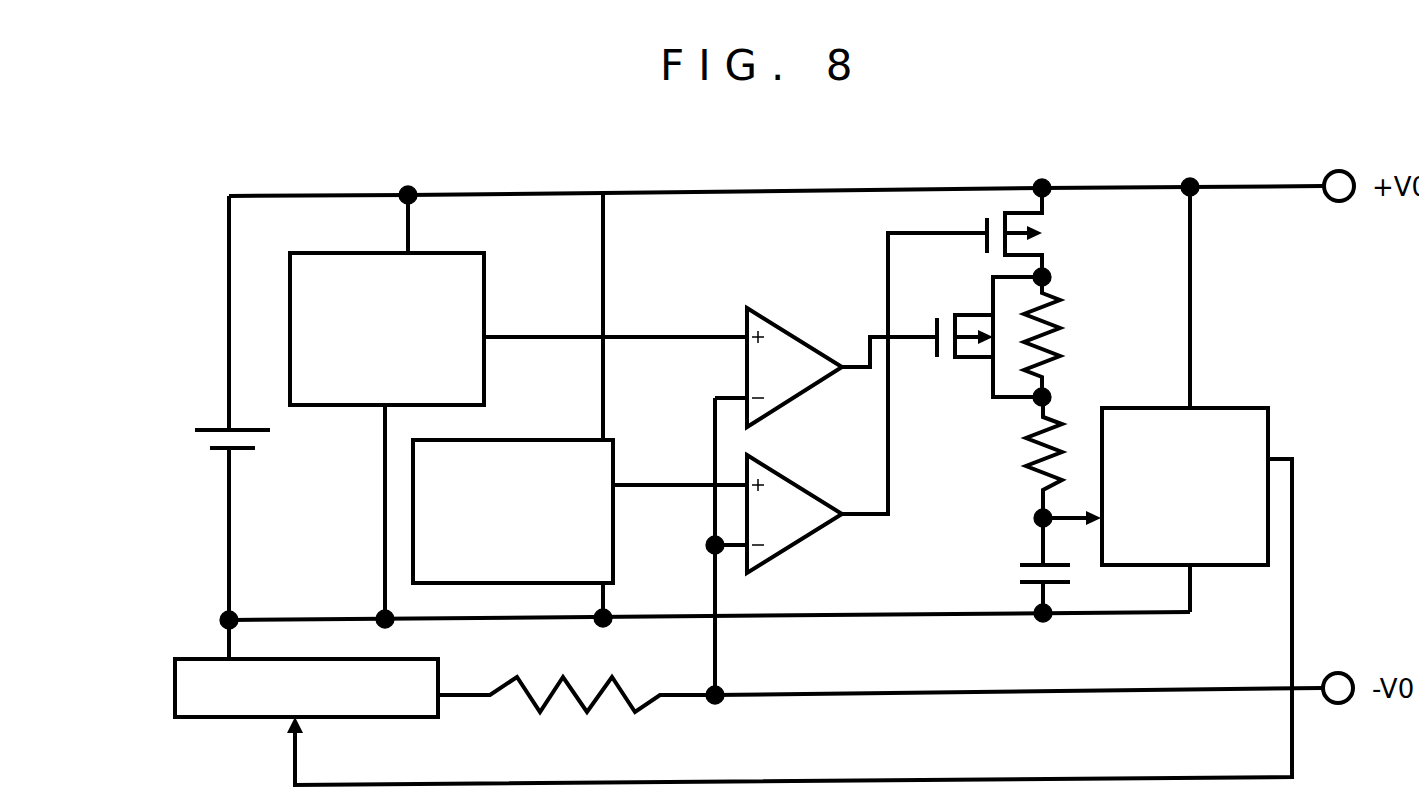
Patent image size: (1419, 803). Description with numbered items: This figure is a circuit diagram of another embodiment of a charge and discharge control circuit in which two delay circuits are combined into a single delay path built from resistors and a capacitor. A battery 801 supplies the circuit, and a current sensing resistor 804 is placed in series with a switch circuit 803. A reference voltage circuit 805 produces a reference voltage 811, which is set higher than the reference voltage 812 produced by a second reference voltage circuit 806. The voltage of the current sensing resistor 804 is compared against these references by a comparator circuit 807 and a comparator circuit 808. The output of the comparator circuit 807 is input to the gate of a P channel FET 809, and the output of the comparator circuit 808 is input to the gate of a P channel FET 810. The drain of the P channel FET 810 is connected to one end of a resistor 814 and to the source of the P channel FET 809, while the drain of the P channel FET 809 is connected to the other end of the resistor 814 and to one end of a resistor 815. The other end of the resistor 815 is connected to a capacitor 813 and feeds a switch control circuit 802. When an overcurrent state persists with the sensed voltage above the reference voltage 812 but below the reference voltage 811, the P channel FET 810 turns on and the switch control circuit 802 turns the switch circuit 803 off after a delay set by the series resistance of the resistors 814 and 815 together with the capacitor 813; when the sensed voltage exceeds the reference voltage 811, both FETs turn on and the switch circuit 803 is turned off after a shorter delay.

The battery 801 is at (278, 445).
The switch control circuit 802 is at (1242, 402).
The switch circuit 803 is at (373, 717).
The current sensing resistor 804 is at (593, 720).
The reference voltage circuit 805 is at (486, 280).
The reference voltage circuit 806 is at (560, 405).
The comparator circuit 807 is at (730, 308).
The comparator circuit 808 is at (793, 552).
The P channel FET 809 is at (930, 322).
The P channel FET 810 is at (1052, 243).
The reference voltage 811 is at (615, 319).
The reference voltage 812 is at (680, 468).
The capacitor 813 is at (1007, 578).
The resistor 814 is at (1067, 337).
The resistor 815 is at (1013, 462).